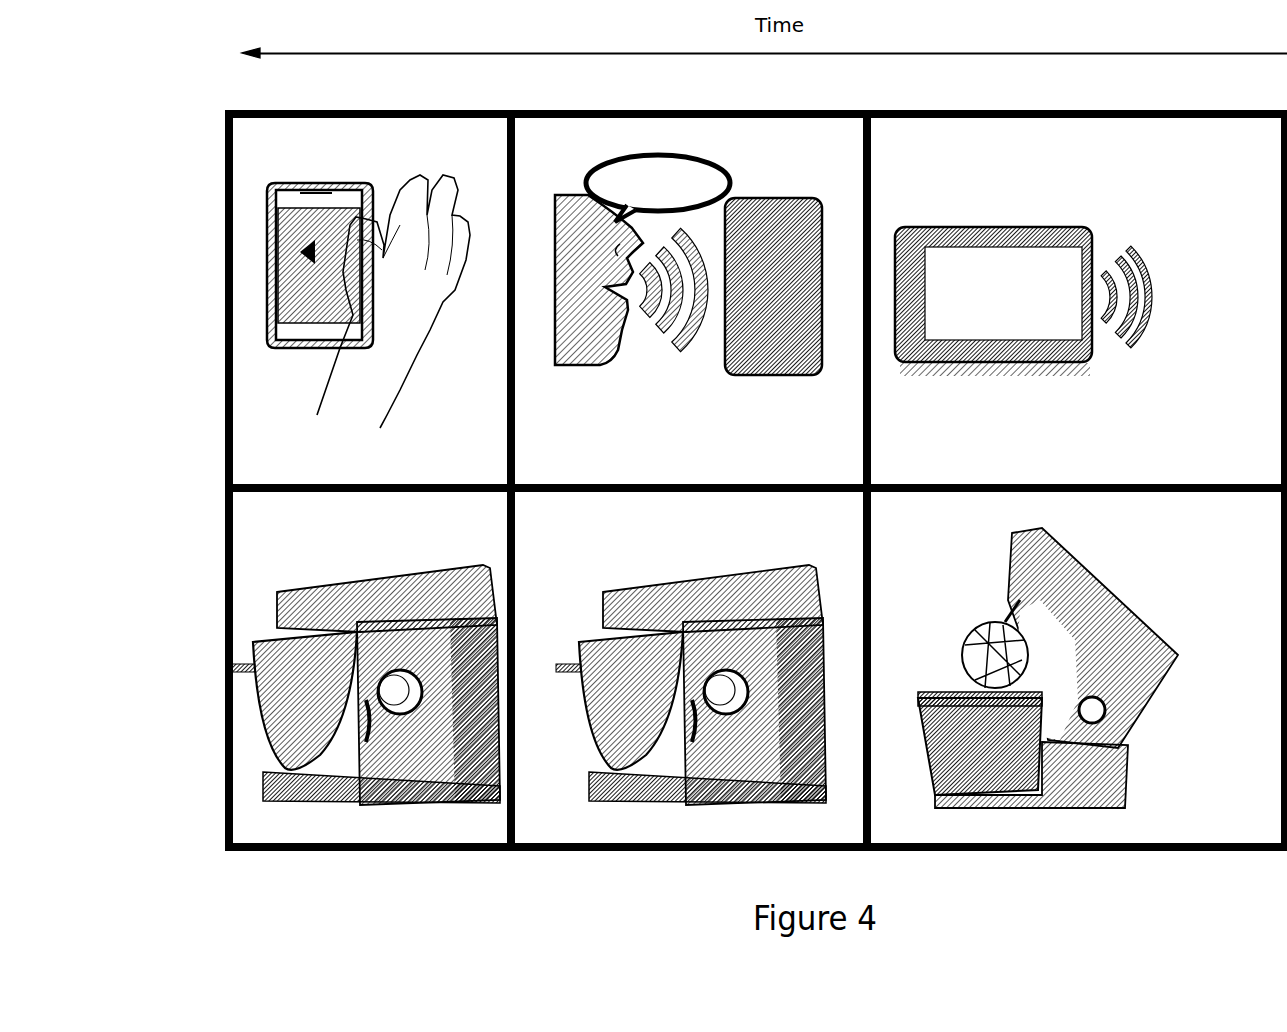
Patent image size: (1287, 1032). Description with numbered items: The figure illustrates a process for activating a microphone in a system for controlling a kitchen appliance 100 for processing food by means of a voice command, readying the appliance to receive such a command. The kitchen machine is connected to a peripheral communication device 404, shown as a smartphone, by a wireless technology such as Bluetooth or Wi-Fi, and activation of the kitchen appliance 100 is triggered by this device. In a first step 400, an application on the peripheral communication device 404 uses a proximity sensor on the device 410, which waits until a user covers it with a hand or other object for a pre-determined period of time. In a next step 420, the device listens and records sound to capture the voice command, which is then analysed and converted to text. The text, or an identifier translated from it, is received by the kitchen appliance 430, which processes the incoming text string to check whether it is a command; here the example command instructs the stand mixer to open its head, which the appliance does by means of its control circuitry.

The kitchen appliance 100 is at (243, 700).
The first step 400 is at (227, 192).
The peripheral communication device 404 is at (270, 258).
The proximity sensor on the device 410 is at (350, 188).
The next step 420 is at (696, 110).
The kitchen appliance receiving the text 430 is at (947, 110).